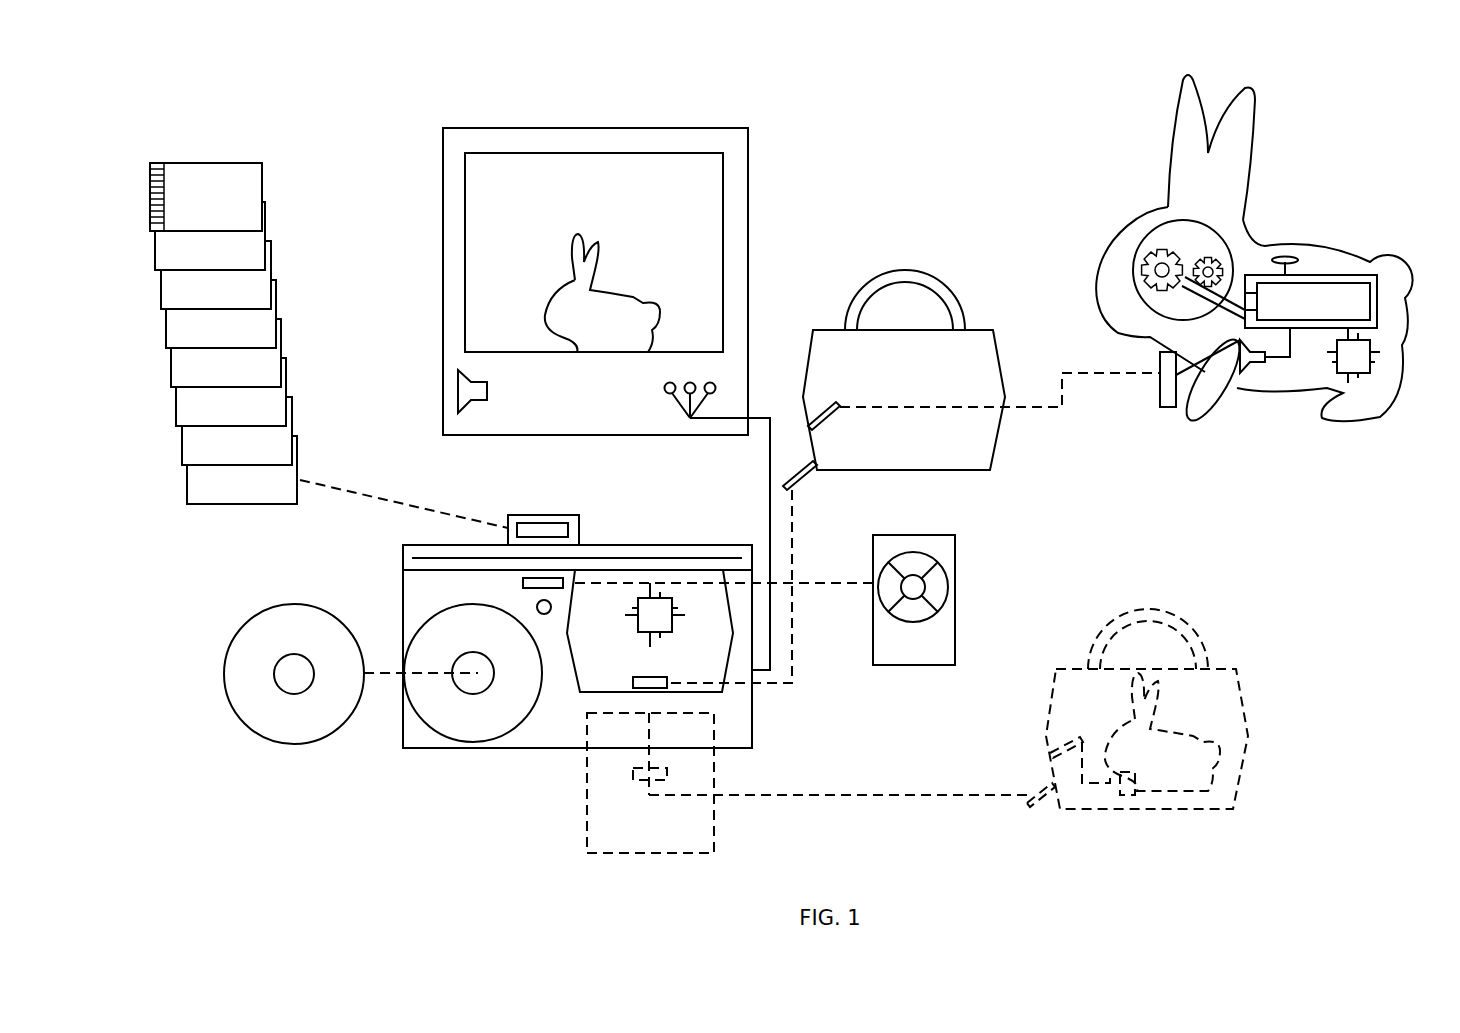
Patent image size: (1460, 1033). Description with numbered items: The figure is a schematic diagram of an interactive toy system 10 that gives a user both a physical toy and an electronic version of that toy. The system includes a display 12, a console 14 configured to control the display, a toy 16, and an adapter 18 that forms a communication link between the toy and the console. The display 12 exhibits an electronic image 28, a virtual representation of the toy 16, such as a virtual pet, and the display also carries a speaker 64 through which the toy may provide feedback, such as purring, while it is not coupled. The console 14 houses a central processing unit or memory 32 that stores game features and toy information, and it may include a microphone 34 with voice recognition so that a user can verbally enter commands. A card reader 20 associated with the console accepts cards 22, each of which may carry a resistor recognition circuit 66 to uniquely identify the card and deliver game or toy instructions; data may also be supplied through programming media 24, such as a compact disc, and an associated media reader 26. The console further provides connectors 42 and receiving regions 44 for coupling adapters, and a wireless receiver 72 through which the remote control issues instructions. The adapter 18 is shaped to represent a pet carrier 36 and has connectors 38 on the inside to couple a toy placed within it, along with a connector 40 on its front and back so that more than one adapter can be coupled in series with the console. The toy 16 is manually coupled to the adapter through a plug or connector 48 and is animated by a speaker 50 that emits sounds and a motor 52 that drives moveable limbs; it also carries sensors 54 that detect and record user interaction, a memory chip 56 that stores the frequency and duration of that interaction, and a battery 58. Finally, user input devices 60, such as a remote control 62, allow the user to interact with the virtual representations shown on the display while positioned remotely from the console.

The interactive toy system 10 is at (1016, 90).
The display 12 is at (585, 127).
The console 14 is at (530, 755).
The toy 16 is at (1150, 188).
The adapter 18 is at (982, 288).
The card reader 20 is at (540, 524).
The cards 22 is at (268, 218).
The programming media 24 is at (258, 705).
The media reader 26 is at (447, 720).
The electronic image 28 is at (640, 290).
The memory 32 is at (660, 620).
The microphone 34 is at (540, 607).
The pet carrier 36 is at (978, 368).
The connectors 38 is at (815, 420).
The connector 40 is at (800, 487).
The connectors 42 is at (652, 678).
The receiving regions 44 is at (707, 818).
The connector 48 is at (1170, 388).
The speaker 50 is at (1232, 373).
The motor 52 is at (1223, 242).
The sensors 54 is at (1288, 260).
The memory chip 56 is at (1357, 362).
The battery 58 is at (1325, 290).
The user input devices 60 is at (958, 558).
The remote control 62 is at (943, 648).
The speaker 64 is at (452, 386).
The resistor recognition circuit 66 is at (158, 187).
The wireless receiver 72 is at (540, 580).